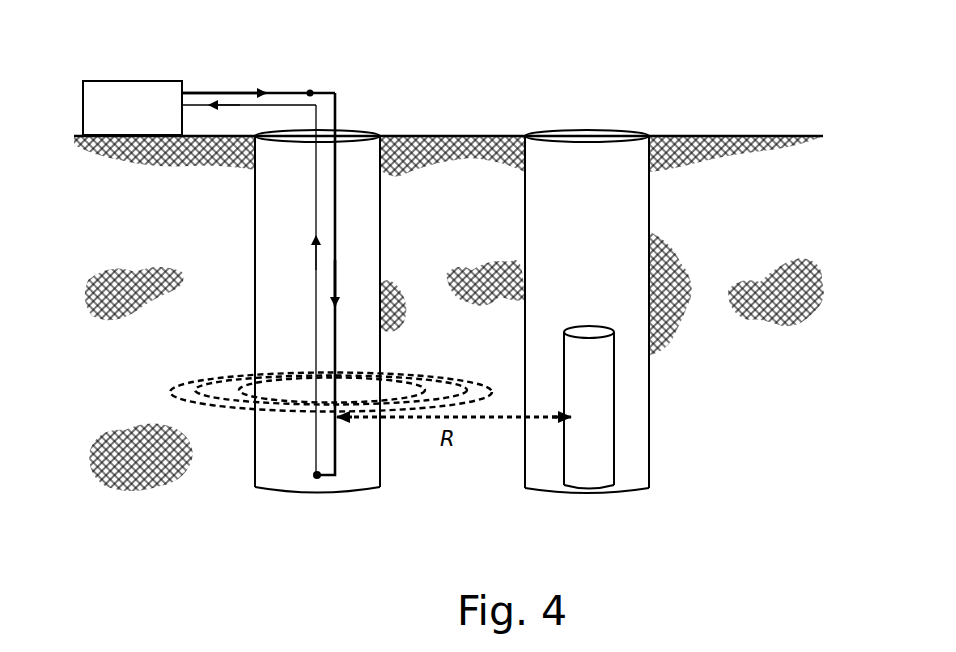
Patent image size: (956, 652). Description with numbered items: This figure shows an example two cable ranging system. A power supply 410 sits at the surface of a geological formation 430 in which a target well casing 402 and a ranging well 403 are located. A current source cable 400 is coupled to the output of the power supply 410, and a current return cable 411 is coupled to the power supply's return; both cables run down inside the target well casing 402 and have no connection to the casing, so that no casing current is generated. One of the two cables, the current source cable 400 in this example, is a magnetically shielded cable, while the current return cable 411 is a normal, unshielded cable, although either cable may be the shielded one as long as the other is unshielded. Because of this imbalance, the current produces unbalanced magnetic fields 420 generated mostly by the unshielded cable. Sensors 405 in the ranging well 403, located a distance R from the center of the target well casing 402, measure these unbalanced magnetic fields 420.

The current source cable 400 is at (293, 244).
The target well casing 402 is at (380, 136).
The ranging well 403 is at (626, 136).
The sensors 405 is at (614, 465).
The power supply 410 is at (130, 81).
The current return cable 411 is at (297, 100).
The unbalanced magnetic fields 420 is at (172, 386).
The geological formation 430 is at (776, 136).